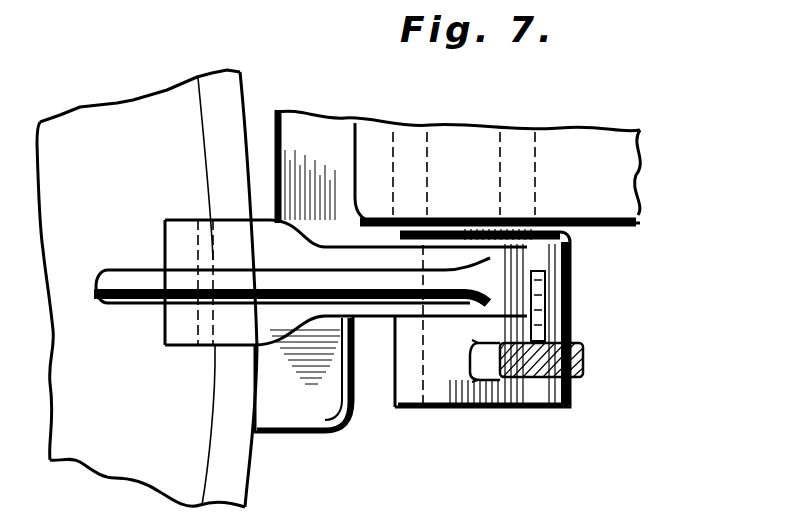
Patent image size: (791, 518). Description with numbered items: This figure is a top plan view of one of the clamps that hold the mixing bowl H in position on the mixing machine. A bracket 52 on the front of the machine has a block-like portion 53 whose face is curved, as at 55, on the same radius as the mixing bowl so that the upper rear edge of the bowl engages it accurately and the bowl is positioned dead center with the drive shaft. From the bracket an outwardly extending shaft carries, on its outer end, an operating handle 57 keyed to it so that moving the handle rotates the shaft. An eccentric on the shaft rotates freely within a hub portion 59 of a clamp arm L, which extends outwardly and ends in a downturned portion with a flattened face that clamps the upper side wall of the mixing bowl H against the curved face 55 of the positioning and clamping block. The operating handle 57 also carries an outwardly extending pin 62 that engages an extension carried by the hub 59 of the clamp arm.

The bracket 52 is at (307, 124).
The block-like portion 53 is at (315, 418).
The curved face of positioning and clamping block 55 is at (257, 392).
The operating handle 57 is at (583, 358).
The hub portion 59 is at (572, 252).
The pin 62 is at (570, 280).
The mixing bowl H is at (147, 288).
The clamp arm L is at (310, 282).